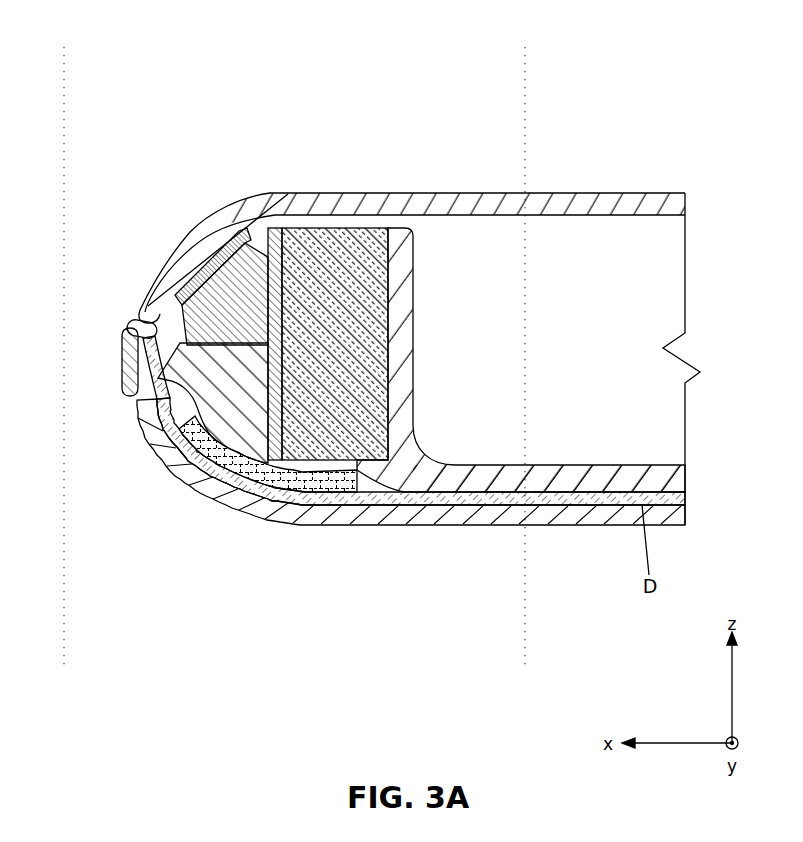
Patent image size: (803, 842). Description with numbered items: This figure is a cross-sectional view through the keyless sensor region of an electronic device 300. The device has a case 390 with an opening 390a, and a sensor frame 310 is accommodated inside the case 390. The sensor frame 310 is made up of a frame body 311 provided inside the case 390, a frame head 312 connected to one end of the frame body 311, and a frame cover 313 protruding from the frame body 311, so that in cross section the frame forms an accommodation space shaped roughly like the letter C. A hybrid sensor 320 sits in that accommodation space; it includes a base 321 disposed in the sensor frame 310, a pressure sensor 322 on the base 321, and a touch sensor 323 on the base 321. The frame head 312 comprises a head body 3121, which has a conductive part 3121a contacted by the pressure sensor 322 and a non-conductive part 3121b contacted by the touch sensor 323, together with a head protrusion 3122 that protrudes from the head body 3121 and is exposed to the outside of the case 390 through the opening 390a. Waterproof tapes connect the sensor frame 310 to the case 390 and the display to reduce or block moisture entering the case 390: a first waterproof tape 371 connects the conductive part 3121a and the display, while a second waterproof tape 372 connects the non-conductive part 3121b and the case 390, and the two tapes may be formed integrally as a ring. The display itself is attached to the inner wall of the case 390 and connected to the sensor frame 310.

The electronic device 300 is at (476, 120).
The sensor frame 310 is at (355, 443).
The frame body 311 is at (453, 478).
The frame head 312 is at (355, 493).
The head body 3121 is at (380, 481).
The conductive part 3121a is at (240, 416).
The non-conductive part 3121b is at (163, 402).
The head protrusion 3122 is at (137, 368).
The frame cover 313 is at (414, 240).
The hybrid sensor 320 is at (285, 255).
The base 321 is at (330, 253).
The pressure sensor 322 is at (240, 282).
The touch sensor 323 is at (274, 240).
The first waterproof tape 371 is at (329, 481).
The second waterproof tape 372 is at (218, 240).
The case 390 is at (289, 507).
The opening 390a is at (128, 331).